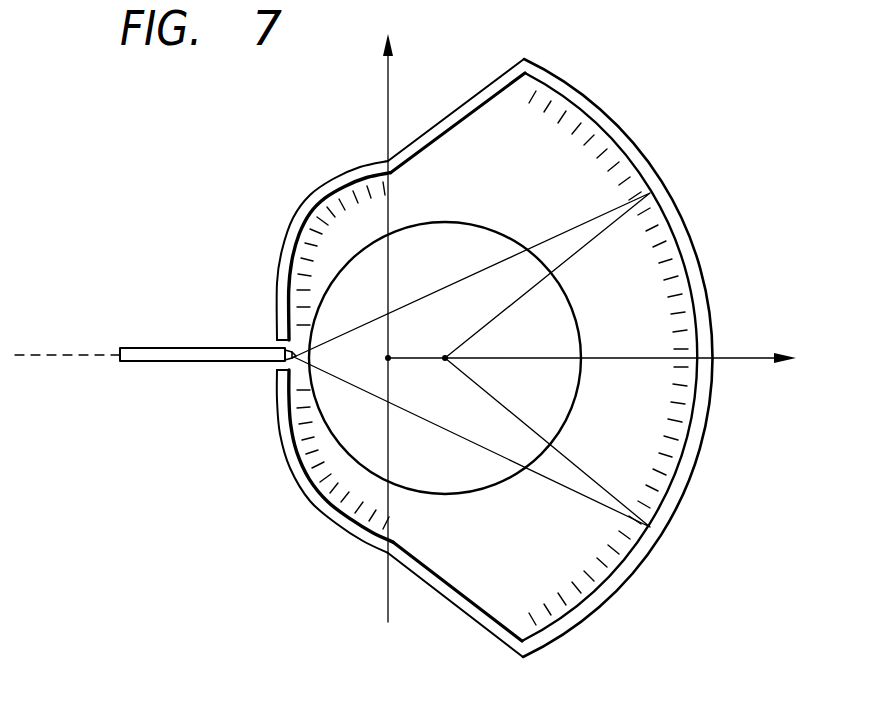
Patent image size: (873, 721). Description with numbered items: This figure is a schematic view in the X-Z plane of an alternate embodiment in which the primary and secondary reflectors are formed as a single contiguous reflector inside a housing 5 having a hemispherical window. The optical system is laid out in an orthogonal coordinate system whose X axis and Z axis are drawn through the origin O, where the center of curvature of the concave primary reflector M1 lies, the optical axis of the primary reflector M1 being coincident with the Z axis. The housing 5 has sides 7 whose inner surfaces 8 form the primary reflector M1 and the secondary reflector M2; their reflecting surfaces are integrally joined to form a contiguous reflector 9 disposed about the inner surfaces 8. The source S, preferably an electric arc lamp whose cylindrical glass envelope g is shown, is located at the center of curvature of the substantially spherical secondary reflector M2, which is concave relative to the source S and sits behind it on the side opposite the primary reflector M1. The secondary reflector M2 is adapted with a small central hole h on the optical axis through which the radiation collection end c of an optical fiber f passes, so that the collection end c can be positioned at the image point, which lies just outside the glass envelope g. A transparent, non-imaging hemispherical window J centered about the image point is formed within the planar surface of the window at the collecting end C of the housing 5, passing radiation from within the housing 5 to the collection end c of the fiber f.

The housing 5 is at (452, 361).
The sides 7 is at (485, 342).
The inner surfaces 8 is at (581, 111).
The contiguous reflector 9 is at (675, 480).
The primary reflector M1 is at (543, 66).
The secondary reflector M2 is at (341, 180).
The channel opening C is at (268, 297).
The radiation collection end c is at (282, 351).
The optical fiber f is at (147, 350).
The glass envelope g is at (463, 505).
The central hole h is at (262, 378).
The hemispherical window J is at (297, 358).
The origin O is at (378, 371).
The source S is at (446, 343).
The x axis X is at (404, 65).
The z axis Z is at (768, 380).